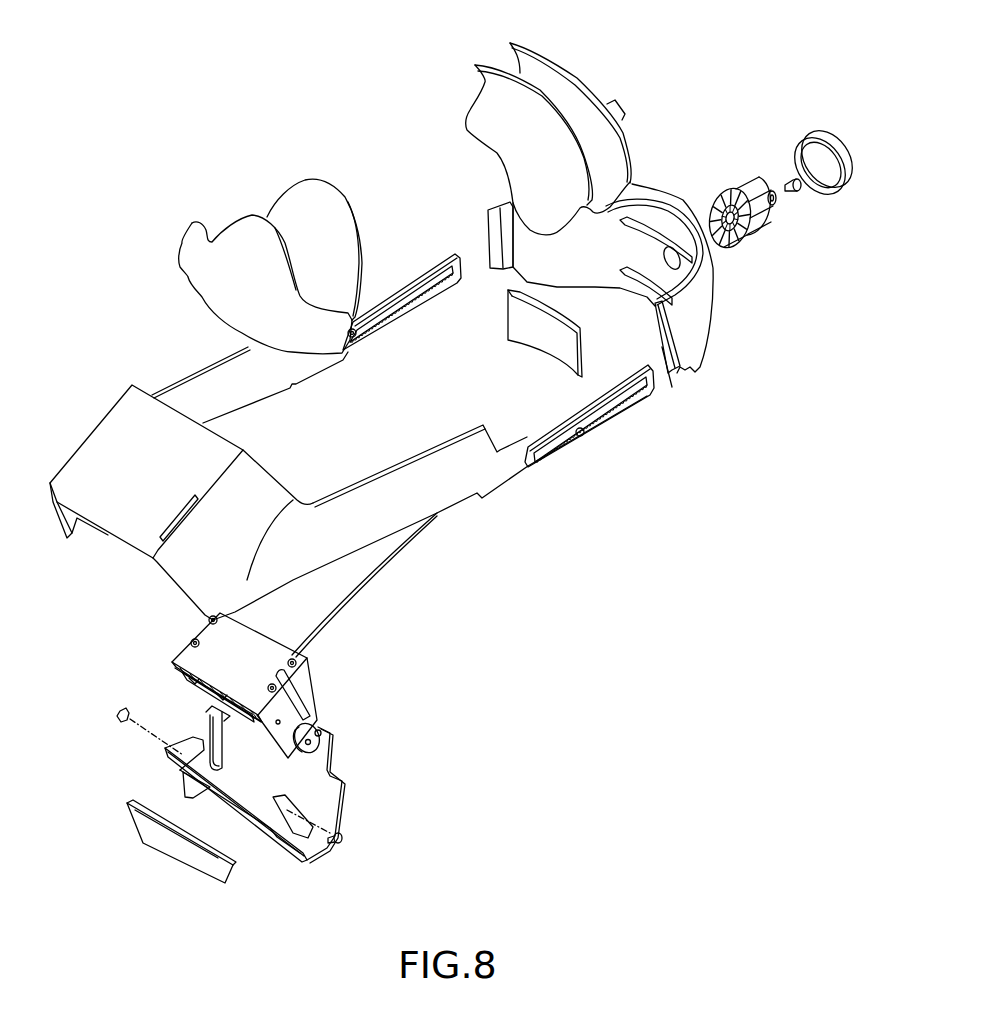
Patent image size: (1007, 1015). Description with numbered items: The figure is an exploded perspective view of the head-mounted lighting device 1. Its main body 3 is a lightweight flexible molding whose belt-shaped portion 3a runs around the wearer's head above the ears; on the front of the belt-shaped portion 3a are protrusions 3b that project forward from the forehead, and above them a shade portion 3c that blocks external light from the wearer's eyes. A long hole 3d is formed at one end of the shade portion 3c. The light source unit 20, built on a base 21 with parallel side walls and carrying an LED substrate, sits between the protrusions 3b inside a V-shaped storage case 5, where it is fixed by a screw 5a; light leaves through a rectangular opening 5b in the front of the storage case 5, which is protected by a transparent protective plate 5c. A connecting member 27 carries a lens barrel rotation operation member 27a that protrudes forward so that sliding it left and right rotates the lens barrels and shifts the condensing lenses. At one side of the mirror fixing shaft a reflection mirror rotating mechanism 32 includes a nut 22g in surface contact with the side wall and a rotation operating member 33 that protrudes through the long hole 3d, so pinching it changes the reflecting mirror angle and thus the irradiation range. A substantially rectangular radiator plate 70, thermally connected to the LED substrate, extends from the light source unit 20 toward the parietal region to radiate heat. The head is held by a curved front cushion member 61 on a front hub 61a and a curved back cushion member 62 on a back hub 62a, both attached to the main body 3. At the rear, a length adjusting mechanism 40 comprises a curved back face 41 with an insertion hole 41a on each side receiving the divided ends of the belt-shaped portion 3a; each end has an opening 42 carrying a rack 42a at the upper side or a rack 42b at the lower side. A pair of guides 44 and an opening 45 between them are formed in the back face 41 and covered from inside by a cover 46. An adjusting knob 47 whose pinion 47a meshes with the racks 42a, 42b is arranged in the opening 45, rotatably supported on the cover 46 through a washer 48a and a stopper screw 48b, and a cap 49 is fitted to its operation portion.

The lighting device 1 is at (403, 78).
The main body 3 is at (348, 473).
The belt-shaped portion 3a is at (197, 397).
The protrusion 3b is at (287, 497).
The shade portion 3c is at (105, 455).
The long hole 3d is at (177, 513).
The storage case 5 is at (277, 795).
The screw 5a is at (119, 715).
The opening 5b is at (205, 782).
The transparent protective plate 5c is at (175, 847).
The light source unit 20 is at (336, 707).
The base 21 is at (188, 653).
The nut 22g is at (312, 745).
The connecting member 27 is at (192, 683).
The lens barrel rotation operation member 27a is at (198, 700).
The reflection mirror rotating mechanism 32 is at (360, 749).
The rotation operating member 33 is at (297, 697).
The length adjusting mechanism 40 is at (742, 118).
The back face 41 is at (611, 304).
The insertion hole 41a is at (488, 240).
The opening 42 is at (504, 373).
The rack 42a is at (613, 398).
The rack 42b is at (420, 307).
The guide 44 is at (652, 268).
The opening 45 is at (680, 262).
The cover 46 is at (552, 341).
The adjusting knob 47 is at (732, 189).
The pinion 47a is at (713, 210).
The washer 48a is at (778, 207).
The stopper screw 48b is at (789, 178).
The cap 49 is at (825, 136).
The front cushion member 61 is at (270, 244).
The front hub 61a is at (233, 240).
The back cushion member 62 is at (520, 127).
The back hub 62a is at (558, 62).
The radiator plate 70 is at (295, 610).